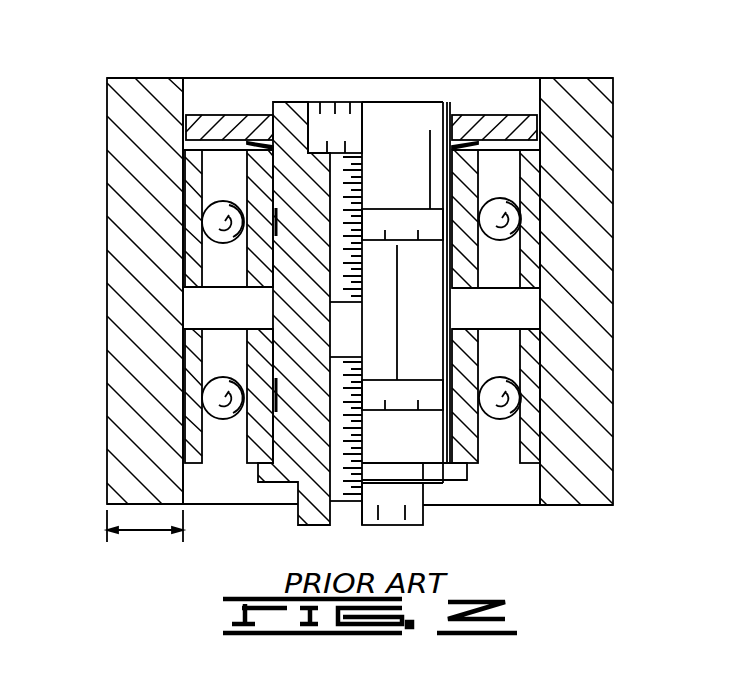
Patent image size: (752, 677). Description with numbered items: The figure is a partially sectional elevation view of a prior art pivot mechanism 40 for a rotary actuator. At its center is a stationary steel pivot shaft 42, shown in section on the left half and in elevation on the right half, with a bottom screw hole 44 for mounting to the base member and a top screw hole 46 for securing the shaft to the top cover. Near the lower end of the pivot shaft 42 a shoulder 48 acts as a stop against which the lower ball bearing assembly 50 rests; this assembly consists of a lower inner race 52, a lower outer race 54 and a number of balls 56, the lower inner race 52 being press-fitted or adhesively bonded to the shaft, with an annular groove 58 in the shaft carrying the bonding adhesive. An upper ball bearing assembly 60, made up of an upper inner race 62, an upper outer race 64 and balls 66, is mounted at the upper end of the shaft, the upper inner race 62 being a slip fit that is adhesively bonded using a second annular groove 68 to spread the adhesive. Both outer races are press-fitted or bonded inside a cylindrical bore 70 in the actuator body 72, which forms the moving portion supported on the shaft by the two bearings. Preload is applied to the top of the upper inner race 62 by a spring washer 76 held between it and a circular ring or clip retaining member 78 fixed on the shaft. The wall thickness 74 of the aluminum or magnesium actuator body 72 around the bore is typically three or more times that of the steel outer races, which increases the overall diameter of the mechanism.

The pivot mechanism 40 is at (622, 138).
The pivot shaft 42 is at (417, 115).
The bottom screw hole 44 is at (333, 480).
The top screw hole 46 is at (350, 123).
The shoulder 48 is at (408, 462).
The lower ball bearing assembly 50 is at (525, 323).
The lower inner race 52 is at (470, 457).
The lower outer race 54 is at (530, 445).
The balls 56 is at (510, 400).
The annular groove 58 is at (378, 390).
The upper ball bearing assembly 60 is at (523, 298).
The upper inner race 62 is at (467, 167).
The upper outer race 64 is at (532, 168).
The balls 66 is at (498, 220).
The second annular groove 68 is at (375, 220).
The cylindrical bore 70 is at (191, 90).
The actuator body 72 is at (121, 78).
The wall thickness 74 is at (148, 528).
The spring washer 76 is at (265, 147).
The retaining member 78 is at (228, 122).